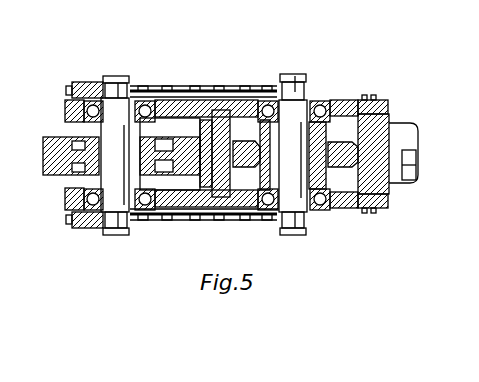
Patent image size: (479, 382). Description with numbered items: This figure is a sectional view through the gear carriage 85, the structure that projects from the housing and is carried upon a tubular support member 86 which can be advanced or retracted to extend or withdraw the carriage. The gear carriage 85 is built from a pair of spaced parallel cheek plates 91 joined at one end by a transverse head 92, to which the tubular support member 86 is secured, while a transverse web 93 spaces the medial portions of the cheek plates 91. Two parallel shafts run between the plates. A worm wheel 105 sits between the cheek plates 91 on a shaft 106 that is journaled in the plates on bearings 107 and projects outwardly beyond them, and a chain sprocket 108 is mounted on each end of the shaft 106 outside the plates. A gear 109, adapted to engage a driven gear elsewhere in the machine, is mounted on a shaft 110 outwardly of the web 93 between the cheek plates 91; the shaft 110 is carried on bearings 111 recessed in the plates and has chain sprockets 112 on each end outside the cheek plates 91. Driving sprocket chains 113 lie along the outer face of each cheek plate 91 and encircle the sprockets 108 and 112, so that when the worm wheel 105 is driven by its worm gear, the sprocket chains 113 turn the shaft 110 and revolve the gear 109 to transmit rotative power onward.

The gear carriage 85 is at (146, 223).
The tubular support member 86 is at (416, 180).
The cheek plates 91 is at (352, 103).
The transverse head 92 is at (379, 123).
The transverse web 93 is at (230, 98).
The worm wheel 105 is at (342, 152).
The shaft 106 is at (288, 170).
The bearings 107 is at (339, 103).
The chain sprocket 108 is at (274, 84).
The gear 109 is at (52, 138).
The shaft 110 is at (108, 173).
The bearings 111 is at (65, 108).
The chain sprockets 112 is at (86, 84).
The driving sprocket chains 113 is at (178, 66).